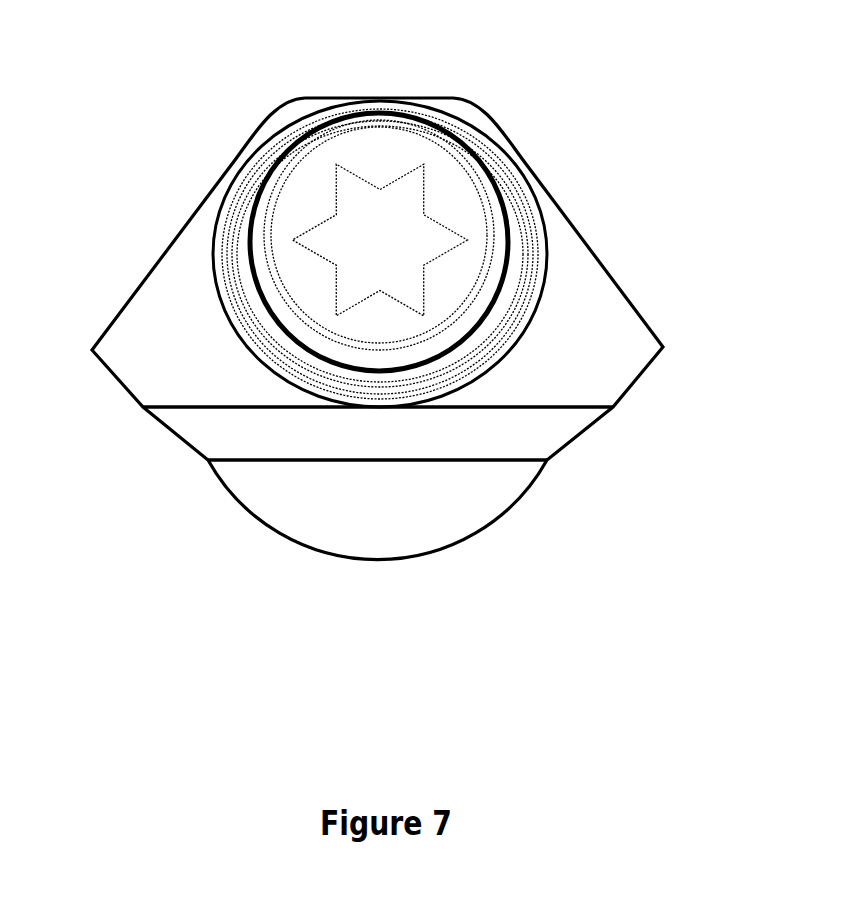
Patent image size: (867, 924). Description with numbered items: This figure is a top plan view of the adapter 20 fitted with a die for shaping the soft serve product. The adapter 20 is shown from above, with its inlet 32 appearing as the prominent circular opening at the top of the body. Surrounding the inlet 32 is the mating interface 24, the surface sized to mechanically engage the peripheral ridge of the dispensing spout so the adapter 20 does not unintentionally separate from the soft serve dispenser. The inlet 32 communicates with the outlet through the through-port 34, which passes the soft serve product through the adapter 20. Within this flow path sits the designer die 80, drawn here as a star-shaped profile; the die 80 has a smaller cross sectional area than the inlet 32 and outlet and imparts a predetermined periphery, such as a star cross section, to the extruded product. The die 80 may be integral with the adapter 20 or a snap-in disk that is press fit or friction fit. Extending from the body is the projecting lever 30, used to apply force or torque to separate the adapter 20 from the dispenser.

The adapter 20 is at (571, 271).
The mating interface 24 is at (258, 195).
The projecting lever 30 is at (477, 533).
The inlet 32 is at (498, 170).
The through-port 34 is at (393, 262).
The designer die 80 is at (300, 284).